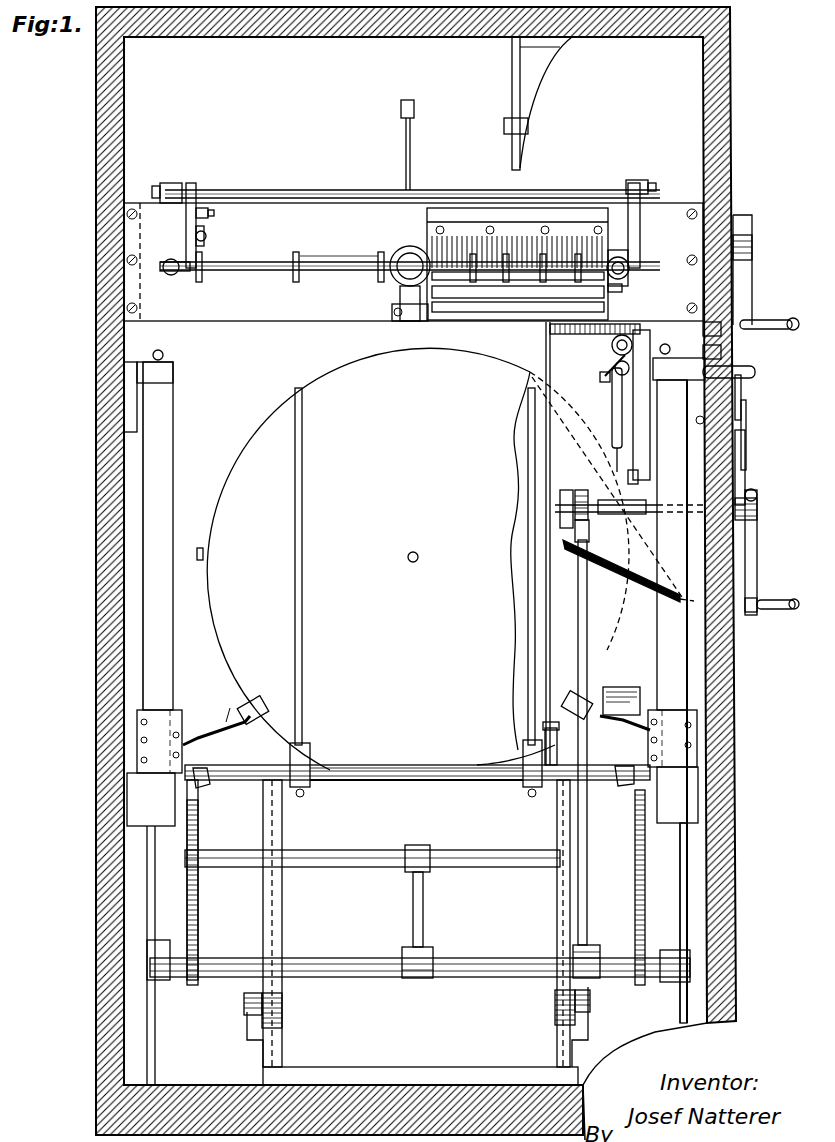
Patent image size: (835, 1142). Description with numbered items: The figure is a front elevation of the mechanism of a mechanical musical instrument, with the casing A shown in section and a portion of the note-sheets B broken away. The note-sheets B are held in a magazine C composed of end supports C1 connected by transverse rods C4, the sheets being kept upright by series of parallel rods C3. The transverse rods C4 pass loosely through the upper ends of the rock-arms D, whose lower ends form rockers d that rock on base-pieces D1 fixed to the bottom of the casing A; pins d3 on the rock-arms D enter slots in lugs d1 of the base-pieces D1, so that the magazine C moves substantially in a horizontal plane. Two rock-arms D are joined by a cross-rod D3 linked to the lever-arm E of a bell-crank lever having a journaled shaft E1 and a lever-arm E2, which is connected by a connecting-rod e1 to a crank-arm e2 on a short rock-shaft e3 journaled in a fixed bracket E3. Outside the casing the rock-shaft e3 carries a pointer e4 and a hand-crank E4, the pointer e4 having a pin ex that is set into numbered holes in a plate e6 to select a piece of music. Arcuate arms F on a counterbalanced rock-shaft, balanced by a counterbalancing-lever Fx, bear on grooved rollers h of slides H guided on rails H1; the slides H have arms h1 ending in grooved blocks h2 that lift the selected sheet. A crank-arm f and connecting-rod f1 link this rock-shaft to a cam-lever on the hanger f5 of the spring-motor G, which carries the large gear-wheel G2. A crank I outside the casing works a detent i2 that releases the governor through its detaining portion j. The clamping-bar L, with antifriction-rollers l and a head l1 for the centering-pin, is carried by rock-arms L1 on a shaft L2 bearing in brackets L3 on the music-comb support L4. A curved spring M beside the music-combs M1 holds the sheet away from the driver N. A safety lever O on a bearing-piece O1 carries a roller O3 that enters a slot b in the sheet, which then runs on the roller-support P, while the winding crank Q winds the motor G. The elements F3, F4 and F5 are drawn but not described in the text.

The casing A is at (413, 189).
The note-sheets B is at (418, 559).
The slot b is at (203, 554).
The magazine C is at (417, 759).
The end supports C1 is at (308, 758).
The parallel rods C3 is at (295, 490).
The transverse rods C4 is at (382, 766).
The rock-arms D is at (263, 912).
The base-pieces D1 is at (270, 1050).
The cross-rod D3 is at (372, 850).
The rockers d is at (282, 1012).
The lugs d1 is at (247, 1036).
The pins d3 is at (244, 1006).
The lever-arm E is at (413, 918).
The journaled shaft E1 is at (335, 958).
The lever-arm E2 is at (592, 948).
The fixed bracket E3 is at (618, 566).
The hand-crank E4 is at (752, 580).
The connecting-rod e1 is at (587, 888).
The crank-arm e2 is at (588, 522).
The rock-shaft e3 is at (643, 514).
The pointer e4 is at (745, 466).
The plate e6 is at (741, 398).
The pin ex is at (746, 420).
The arcuate arms F is at (190, 898).
The rack F3 is at (198, 850).
The bar F4 is at (348, 781).
The pawl F5 is at (205, 788).
The counterbalancing-lever Fx is at (621, 688).
The crank-arm f is at (557, 743).
The connecting-rod f1 is at (607, 487).
The hanger f5 is at (512, 178).
The spring-motor G is at (568, 334).
The motion-transmitting gear-wheel G2 is at (612, 345).
The slides H is at (155, 738).
The rails H1 is at (153, 585).
The grooved rollers h is at (188, 740).
The arms h1 is at (222, 708).
The grooved blocks h2 is at (572, 696).
The crank I is at (735, 362).
The detent i2 is at (603, 374).
The governor-detaining portion j is at (600, 382).
The clamping-bar L is at (328, 270).
The rock-arms L1 is at (186, 222).
The shaft L2 is at (358, 196).
The brackets L3 is at (640, 184).
The music-comb support L4 is at (339, 237).
The antifriction-rollers l is at (295, 252).
The head l1 is at (410, 247).
The spring M is at (628, 282).
The music-combs M1 is at (522, 240).
The driver N is at (615, 292).
The lever O is at (206, 238).
The bearing-piece O1 is at (206, 216).
The roller O3 is at (198, 272).
The roller-support P is at (401, 114).
The motor-winding crank Q is at (743, 280).